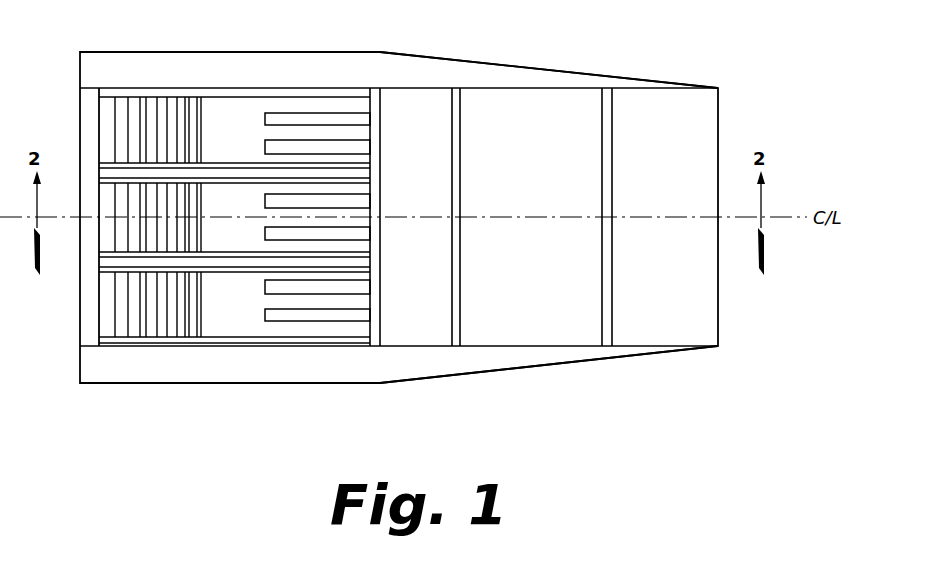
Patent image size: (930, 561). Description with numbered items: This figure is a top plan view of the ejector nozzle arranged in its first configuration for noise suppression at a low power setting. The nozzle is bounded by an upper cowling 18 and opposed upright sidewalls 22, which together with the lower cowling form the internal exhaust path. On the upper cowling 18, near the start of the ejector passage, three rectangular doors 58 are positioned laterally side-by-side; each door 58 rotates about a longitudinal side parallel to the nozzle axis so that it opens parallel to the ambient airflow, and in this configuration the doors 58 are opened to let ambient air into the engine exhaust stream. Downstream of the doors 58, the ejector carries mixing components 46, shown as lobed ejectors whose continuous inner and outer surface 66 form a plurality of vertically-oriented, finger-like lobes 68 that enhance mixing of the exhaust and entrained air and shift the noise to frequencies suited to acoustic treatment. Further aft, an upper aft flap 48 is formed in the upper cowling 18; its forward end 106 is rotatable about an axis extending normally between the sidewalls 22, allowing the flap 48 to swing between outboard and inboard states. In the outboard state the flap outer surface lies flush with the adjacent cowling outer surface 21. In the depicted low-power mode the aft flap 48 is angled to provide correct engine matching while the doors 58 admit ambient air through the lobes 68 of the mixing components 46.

The upper cowling 18 is at (88, 108).
The cowling outer surface 21 is at (124, 90).
The upright sidewalls 22 is at (500, 73).
The mixing components 46 is at (304, 112).
The upper aft flap 48 is at (571, 123).
The doors 58 is at (230, 97).
The outer surface 66 is at (350, 137).
The lobes 68 is at (340, 238).
The forward end 106 is at (455, 346).